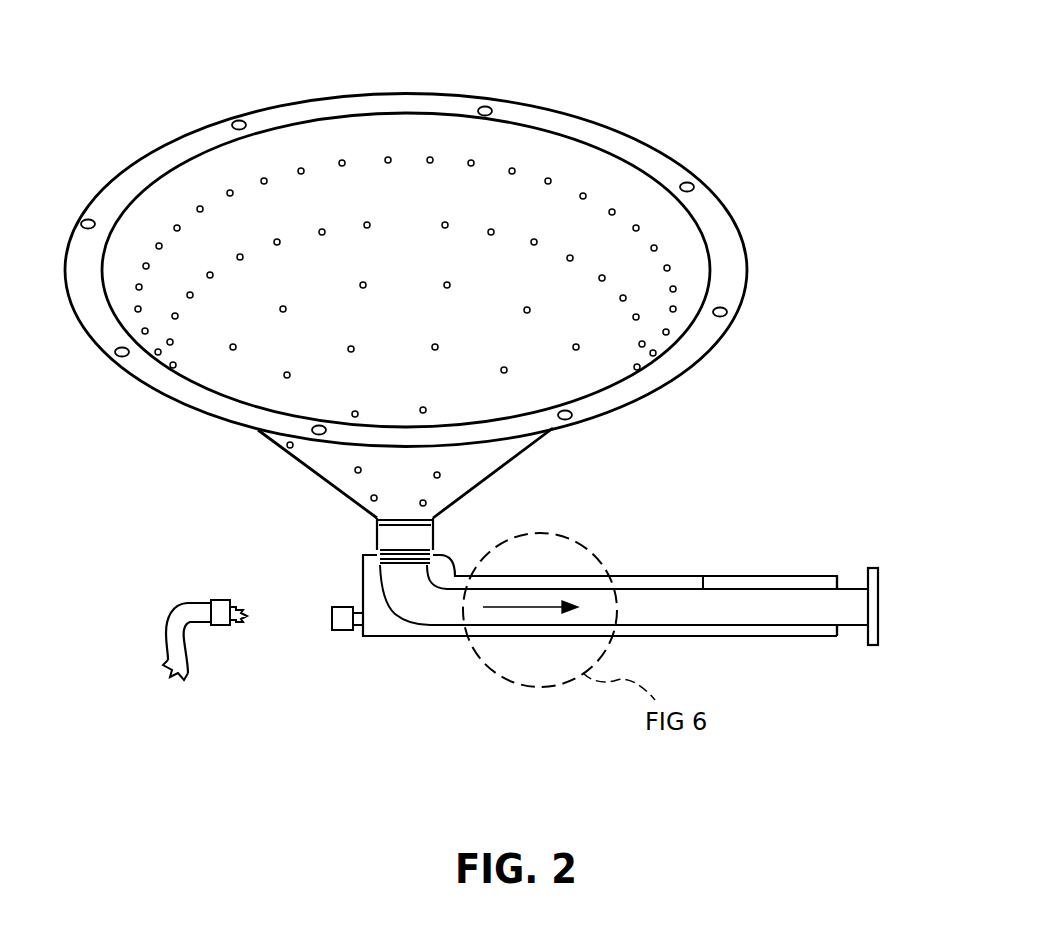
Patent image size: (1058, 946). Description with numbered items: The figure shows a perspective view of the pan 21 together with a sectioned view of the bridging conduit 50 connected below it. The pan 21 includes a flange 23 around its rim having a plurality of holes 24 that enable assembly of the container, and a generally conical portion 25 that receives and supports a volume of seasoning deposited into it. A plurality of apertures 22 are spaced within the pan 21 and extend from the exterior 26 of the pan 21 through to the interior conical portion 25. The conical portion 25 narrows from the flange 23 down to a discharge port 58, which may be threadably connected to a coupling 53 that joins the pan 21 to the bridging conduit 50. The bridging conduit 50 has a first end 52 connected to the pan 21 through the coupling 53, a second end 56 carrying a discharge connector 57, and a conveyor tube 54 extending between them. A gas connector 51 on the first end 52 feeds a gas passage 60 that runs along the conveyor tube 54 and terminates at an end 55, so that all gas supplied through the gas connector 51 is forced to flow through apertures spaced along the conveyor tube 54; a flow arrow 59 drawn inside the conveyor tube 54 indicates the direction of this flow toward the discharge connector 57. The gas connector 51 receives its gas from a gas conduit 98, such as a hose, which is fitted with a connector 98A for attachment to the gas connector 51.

The pan 21 is at (662, 372).
The apertures 22 is at (287, 378).
The flange 23 is at (643, 162).
The holes 24 is at (695, 183).
The conical portion 25 is at (413, 148).
The exterior 26 is at (323, 463).
The bridging conduit 50 is at (642, 573).
The gas connector 51 is at (329, 618).
The first end 52 is at (364, 634).
The coupling 53 is at (437, 527).
The conveyor tube 54 is at (703, 587).
The end 55 is at (837, 580).
The second end 56 is at (852, 627).
The discharge connector 57 is at (873, 645).
The discharge port 58 is at (403, 568).
The flow direction arrow 59 is at (527, 607).
The gas passage 60 is at (762, 583).
The gas conduit 98 is at (180, 615).
The hose connector 98A is at (218, 600).